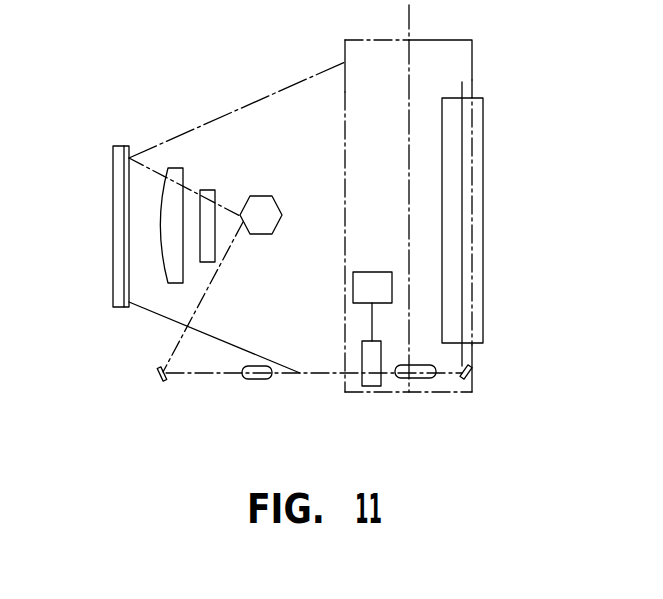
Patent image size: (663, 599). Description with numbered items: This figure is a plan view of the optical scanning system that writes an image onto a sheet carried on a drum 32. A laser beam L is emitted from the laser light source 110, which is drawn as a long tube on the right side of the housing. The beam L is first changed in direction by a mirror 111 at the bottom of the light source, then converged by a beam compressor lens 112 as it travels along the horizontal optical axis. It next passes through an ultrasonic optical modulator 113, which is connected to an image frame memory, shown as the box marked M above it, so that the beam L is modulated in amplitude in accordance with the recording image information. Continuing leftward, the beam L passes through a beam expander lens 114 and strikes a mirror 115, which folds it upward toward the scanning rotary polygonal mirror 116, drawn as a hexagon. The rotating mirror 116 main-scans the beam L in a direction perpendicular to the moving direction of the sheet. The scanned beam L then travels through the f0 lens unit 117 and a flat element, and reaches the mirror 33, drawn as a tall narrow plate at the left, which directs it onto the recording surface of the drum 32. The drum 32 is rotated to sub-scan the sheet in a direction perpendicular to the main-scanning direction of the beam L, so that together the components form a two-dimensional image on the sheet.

The drum 32 is at (345, 90).
The mirror 33 is at (113, 218).
The laser light source 110 is at (478, 213).
The mirror 111 is at (470, 375).
The beam compressor lens 112 is at (423, 380).
The ultrasonic optical modulator 113 is at (372, 388).
The beam expander lens 114 is at (257, 380).
The mirror 115 is at (162, 382).
The scanning rotary polygonal mirror 116 is at (257, 196).
The f0 lens unit 117 is at (175, 168).
The laser beam L is at (314, 378).